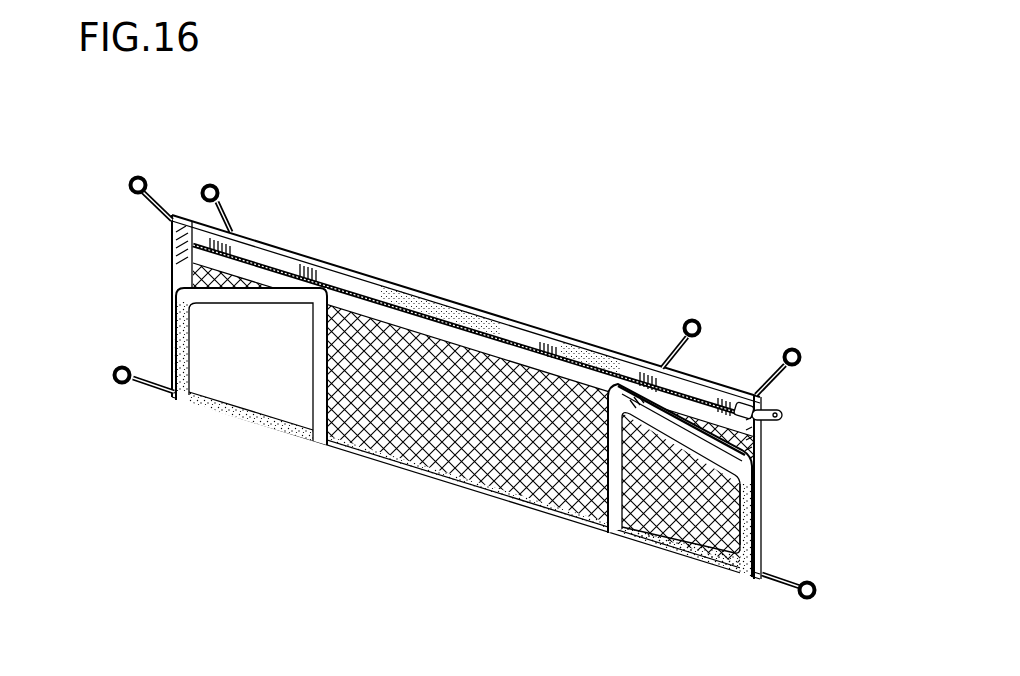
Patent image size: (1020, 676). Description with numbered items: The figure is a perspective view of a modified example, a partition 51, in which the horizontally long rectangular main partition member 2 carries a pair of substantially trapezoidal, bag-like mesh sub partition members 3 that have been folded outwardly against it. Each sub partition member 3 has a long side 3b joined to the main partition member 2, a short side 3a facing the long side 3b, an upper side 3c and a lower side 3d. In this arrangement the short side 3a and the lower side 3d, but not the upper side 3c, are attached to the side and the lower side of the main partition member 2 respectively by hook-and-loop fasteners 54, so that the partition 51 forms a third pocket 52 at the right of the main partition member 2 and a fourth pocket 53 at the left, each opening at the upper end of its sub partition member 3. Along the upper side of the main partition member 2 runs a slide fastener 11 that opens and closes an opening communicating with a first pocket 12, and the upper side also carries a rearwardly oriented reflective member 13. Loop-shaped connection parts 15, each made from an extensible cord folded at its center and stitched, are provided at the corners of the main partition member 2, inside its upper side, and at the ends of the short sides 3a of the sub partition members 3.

The main partition member 2 is at (466, 286).
The sub partition member 3 is at (452, 396).
The short side 3a is at (452, 380).
The long side 3b is at (348, 335).
The upper side 3c is at (262, 295).
The lower side 3d is at (272, 430).
The slide fastener 11 is at (783, 352).
The first pocket 12 is at (745, 407).
The reflective member 13 is at (456, 312).
The connection part 15 is at (467, 388).
The partition 51 is at (201, 152).
The third pocket 52 is at (200, 247).
The fourth pocket 53 is at (682, 377).
The hook-and-loop fastener 54 is at (240, 422).